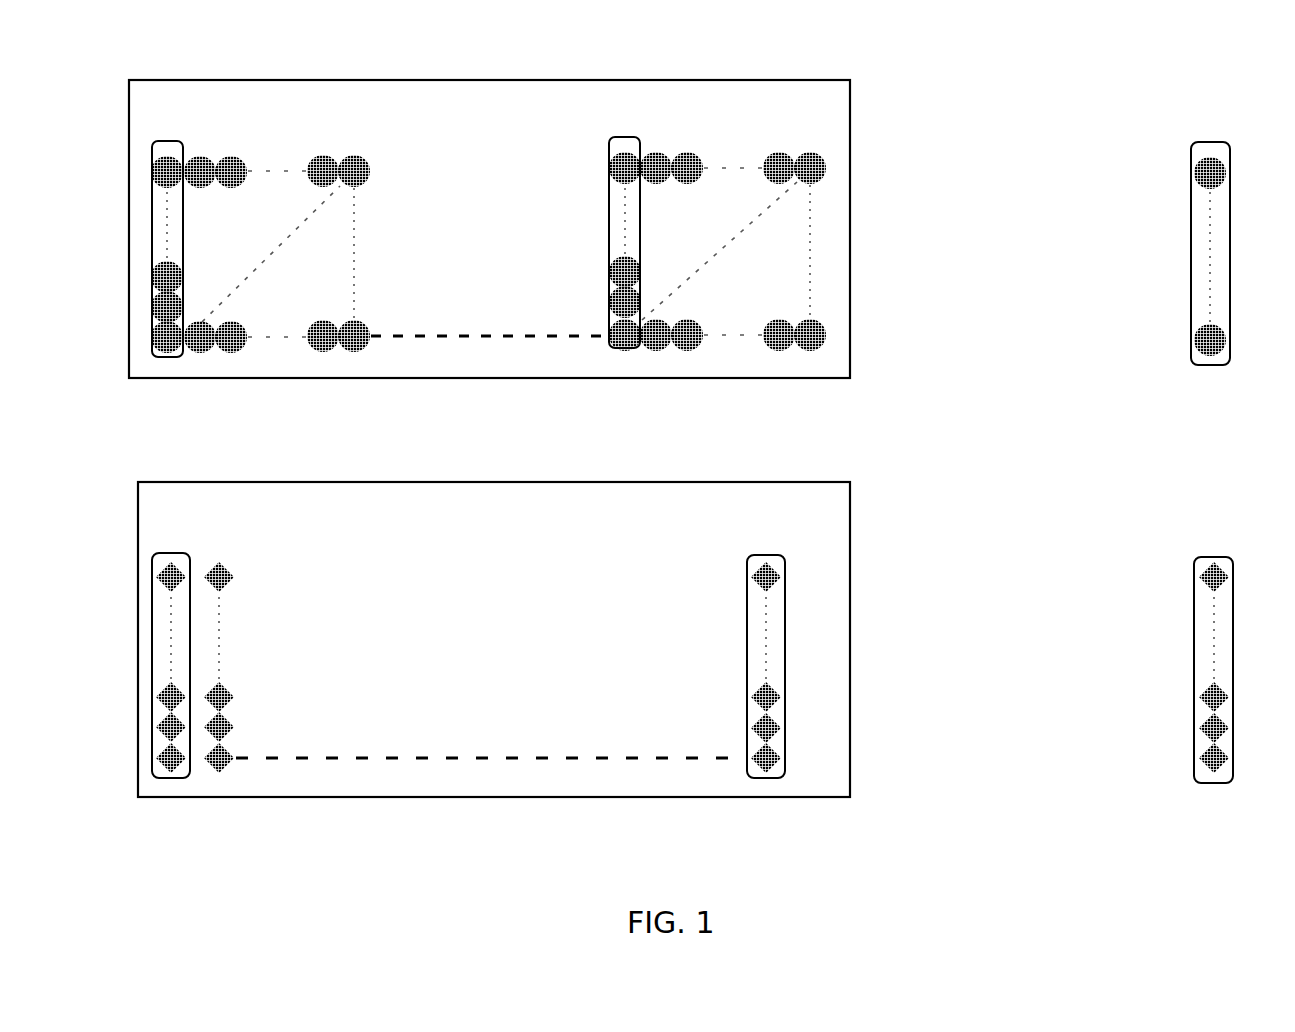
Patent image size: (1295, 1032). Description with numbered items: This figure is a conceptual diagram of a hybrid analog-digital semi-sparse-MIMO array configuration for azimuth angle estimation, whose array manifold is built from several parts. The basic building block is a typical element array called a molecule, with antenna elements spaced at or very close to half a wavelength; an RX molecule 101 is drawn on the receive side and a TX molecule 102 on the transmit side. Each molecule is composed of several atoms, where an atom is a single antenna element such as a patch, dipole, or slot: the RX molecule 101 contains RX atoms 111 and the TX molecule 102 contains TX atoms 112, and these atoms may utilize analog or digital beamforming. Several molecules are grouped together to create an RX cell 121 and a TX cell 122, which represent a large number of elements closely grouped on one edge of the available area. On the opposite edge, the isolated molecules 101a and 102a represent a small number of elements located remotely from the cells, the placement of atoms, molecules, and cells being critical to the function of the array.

The RX cell 121 is at (129, 80).
The TX cell 122 is at (138, 482).
The RX molecule 101 is at (166, 140).
The isolated RX molecule 101a is at (1210, 140).
The TX molecule 102 is at (166, 552).
The isolated TX molecule 102a is at (1213, 556).
The RX atom 111 is at (201, 158).
The TX atom 112 is at (226, 566).